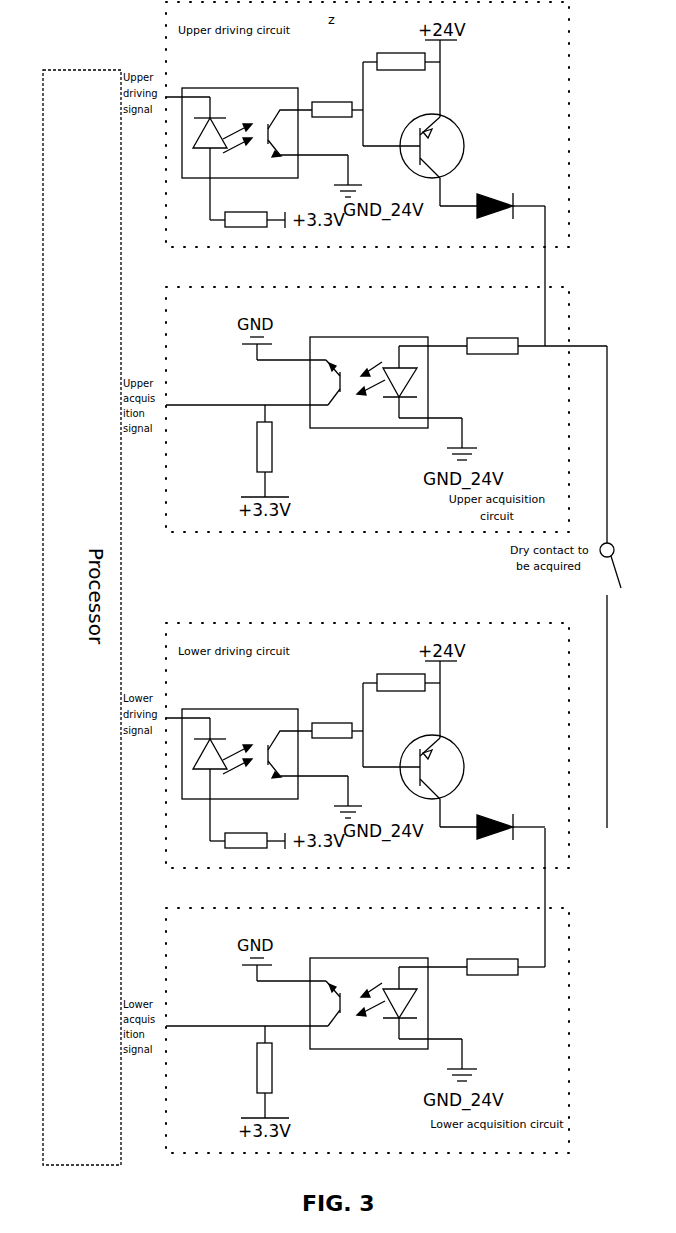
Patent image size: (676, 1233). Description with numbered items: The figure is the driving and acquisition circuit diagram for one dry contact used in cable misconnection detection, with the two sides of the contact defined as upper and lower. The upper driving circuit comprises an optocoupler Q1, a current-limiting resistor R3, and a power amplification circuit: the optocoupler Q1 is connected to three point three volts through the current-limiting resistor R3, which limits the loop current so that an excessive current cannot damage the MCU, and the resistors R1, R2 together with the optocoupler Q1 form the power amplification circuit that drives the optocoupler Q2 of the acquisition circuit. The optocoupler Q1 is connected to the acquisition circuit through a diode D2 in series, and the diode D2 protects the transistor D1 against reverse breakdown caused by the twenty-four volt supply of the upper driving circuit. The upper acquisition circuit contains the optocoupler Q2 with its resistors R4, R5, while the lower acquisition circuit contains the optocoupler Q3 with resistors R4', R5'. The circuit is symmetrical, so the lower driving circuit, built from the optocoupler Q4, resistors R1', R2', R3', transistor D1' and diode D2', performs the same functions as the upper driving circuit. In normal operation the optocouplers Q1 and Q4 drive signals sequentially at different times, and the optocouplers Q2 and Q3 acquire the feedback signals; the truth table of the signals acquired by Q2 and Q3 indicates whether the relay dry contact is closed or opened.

The optocoupler Q1 is at (257, 142).
The resistor R1 is at (401, 52).
The resistor R2 is at (337, 98).
The current-limiting resistor R3 is at (247, 209).
The transistor D1 is at (443, 160).
The diode D2 is at (492, 198).
The optocoupler Q2 is at (388, 372).
The resistor R4 is at (492, 335).
The resistor R5 is at (271, 451).
The optocoupler Q3 is at (257, 763).
The resistor R1' is at (401, 673).
The resistor R2' is at (337, 719).
The current-limiting resistor R3' is at (247, 830).
The transistor D1' is at (446, 781).
The diode D2' is at (492, 819).
The optocoupler Q4 is at (388, 993).
The resistor R4' is at (492, 956).
The resistor R5' is at (273, 1072).